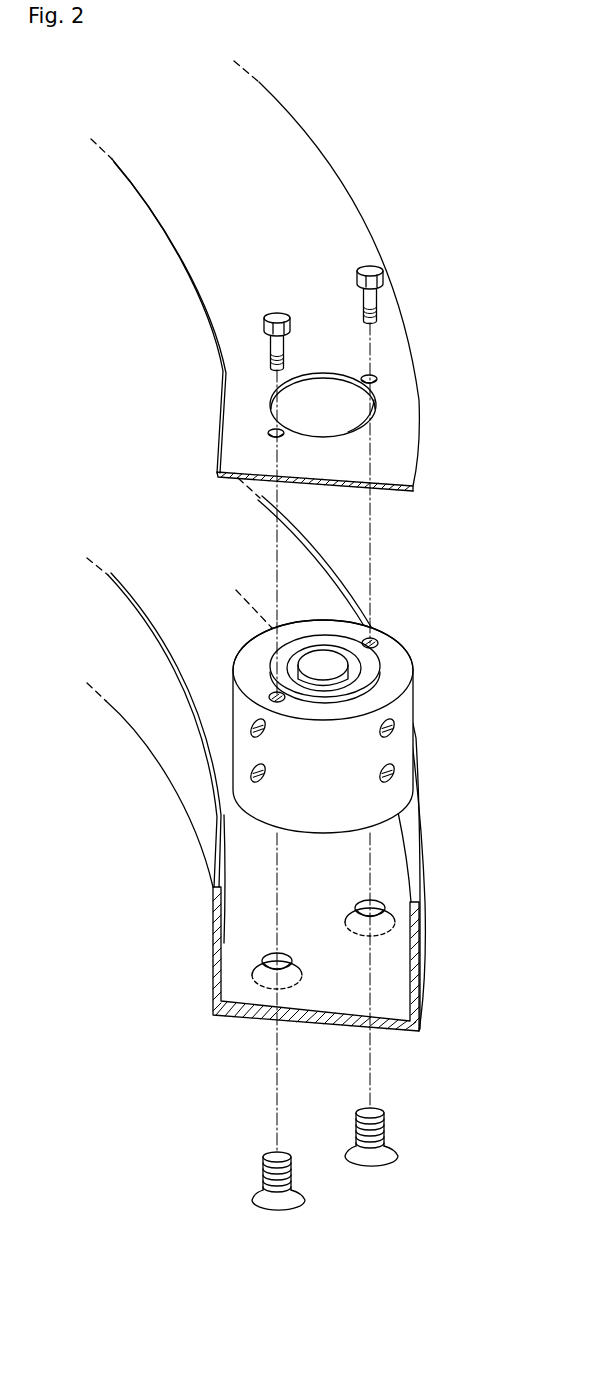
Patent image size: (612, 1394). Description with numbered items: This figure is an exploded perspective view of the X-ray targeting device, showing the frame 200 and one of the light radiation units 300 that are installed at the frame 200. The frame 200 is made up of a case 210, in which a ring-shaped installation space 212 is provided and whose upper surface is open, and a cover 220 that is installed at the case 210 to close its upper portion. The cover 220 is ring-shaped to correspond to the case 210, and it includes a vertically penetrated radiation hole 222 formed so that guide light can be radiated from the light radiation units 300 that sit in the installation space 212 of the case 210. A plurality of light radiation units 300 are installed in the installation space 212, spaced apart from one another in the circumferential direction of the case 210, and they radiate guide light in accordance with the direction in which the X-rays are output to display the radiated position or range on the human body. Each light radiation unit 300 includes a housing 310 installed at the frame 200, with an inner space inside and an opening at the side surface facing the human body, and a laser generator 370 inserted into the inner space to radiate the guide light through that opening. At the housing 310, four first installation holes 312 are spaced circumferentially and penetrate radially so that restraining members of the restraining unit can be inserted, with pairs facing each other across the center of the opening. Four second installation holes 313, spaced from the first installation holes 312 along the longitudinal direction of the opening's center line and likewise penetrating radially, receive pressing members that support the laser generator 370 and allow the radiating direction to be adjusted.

The frame 200 is at (271, 561).
The case 210 is at (290, 769).
The installation space 212 is at (385, 974).
The cover 220 is at (293, 276).
The radiation hole 222 is at (374, 410).
The light radiation unit 300 is at (375, 689).
The housing 310 is at (367, 689).
The first installation holes 312 is at (393, 733).
The second installation holes 313 is at (392, 775).
The laser generator 370 is at (320, 661).